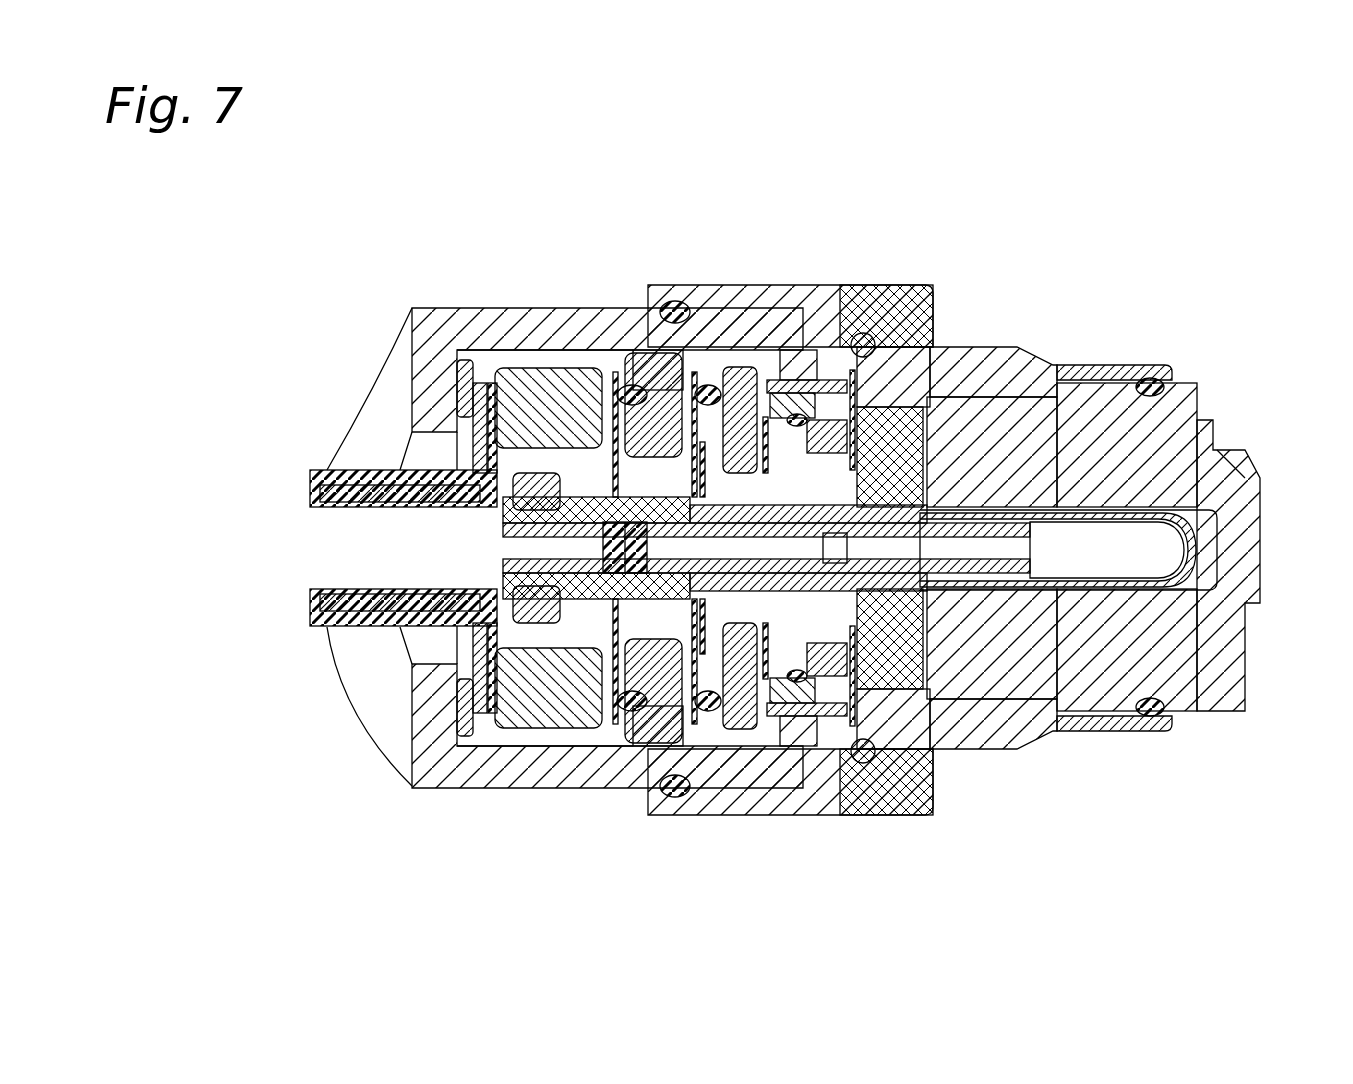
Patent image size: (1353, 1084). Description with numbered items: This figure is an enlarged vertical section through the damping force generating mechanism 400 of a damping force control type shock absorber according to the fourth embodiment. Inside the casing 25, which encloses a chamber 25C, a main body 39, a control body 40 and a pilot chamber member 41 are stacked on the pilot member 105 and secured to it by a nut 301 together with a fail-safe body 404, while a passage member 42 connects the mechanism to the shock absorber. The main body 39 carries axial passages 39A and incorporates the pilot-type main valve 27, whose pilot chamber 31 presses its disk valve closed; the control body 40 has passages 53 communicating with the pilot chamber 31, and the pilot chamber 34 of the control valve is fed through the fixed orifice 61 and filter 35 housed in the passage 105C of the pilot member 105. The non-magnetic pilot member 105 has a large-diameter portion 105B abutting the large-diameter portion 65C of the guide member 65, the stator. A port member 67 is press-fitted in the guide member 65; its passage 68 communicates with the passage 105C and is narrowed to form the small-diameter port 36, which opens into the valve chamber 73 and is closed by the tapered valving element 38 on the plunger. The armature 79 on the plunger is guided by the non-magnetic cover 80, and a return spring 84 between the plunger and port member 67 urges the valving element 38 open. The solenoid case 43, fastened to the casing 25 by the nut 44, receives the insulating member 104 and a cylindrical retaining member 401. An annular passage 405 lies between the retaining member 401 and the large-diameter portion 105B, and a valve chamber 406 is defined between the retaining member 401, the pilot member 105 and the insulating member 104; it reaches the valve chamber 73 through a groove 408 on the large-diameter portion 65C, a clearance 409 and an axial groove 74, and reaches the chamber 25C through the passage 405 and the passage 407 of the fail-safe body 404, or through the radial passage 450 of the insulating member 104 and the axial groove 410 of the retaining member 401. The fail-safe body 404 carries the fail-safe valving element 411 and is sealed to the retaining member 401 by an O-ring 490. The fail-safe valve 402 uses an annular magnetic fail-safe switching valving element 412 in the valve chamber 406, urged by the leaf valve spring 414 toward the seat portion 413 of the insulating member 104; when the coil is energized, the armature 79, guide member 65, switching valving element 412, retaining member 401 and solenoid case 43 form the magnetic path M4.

The casing 25 is at (455, 312).
The chamber 25C is at (483, 330).
The nut 301 is at (440, 468).
The filter 35 is at (500, 528).
The passage 105C is at (460, 462).
The passage member 42 is at (318, 608).
The pilot member 105 is at (500, 578).
The fixed orifice 61 is at (500, 545).
The passages 53 is at (660, 792).
The main valve 27 is at (595, 745).
The main body 39 is at (500, 742).
The port member 67 is at (563, 395).
The passages 39A is at (540, 747).
The passage 68 is at (612, 392).
The control body 40 is at (640, 772).
The clearance 409 is at (640, 395).
The pilot chamber 31 is at (598, 742).
The fail-safe valving element 411 is at (688, 395).
The passage 407 is at (715, 400).
The fail-safe body 404 is at (750, 400).
The pilot chamber 34 is at (695, 762).
The pilot chamber member 41 is at (728, 782).
The O-ring 490 is at (766, 782).
The axial groove 410 is at (772, 385).
The guide member 65 is at (805, 390).
The retaining member 401 is at (836, 420).
The large-diameter portion 105B is at (790, 782).
The valve spring 414 is at (855, 795).
The axial groove 74 is at (745, 782).
The groove 408 is at (852, 370).
The annular passage 405 is at (866, 405).
The fail-safe valve 402 is at (872, 360).
The insulating member 104 is at (958, 738).
The damping force generating mechanism 400 is at (1055, 249).
The radial passage 450 is at (897, 338).
The valve chamber 406 is at (878, 370).
The nut 44 is at (926, 816).
The fail-safe switching valving element 412 is at (888, 818).
The seat portion 413 is at (940, 752).
The large-diameter portion 65C is at (940, 300).
The valve chamber 73 is at (1062, 380).
The solenoid case 43 is at (1035, 747).
The magnetic path M4 is at (1075, 733).
The port 36 is at (1018, 398).
The valving element 38 is at (1115, 382).
The return spring 84 is at (1152, 380).
The cover 80 is at (1214, 512).
The armature 79 is at (1178, 552).